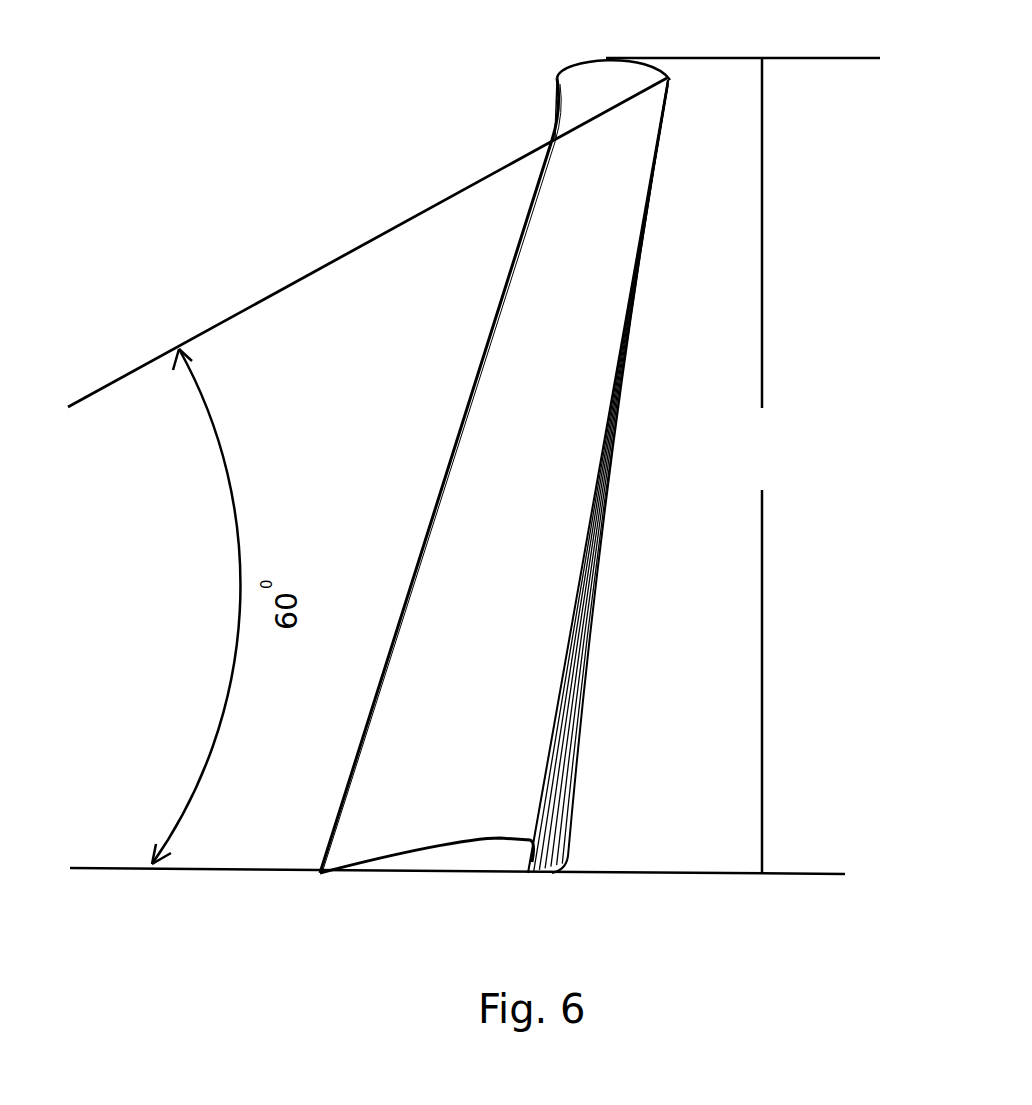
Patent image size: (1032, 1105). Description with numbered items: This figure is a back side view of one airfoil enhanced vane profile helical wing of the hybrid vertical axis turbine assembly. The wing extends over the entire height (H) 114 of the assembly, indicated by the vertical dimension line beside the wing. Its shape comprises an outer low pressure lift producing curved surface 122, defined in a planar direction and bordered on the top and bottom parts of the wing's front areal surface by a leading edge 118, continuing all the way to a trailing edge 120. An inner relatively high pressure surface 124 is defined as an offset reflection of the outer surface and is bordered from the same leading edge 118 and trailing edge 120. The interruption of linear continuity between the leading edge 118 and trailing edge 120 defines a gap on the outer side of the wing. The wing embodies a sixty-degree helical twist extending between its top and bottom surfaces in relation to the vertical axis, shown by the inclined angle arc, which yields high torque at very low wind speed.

The height (H) of the assembly 114 is at (776, 362).
The leading edge 118 is at (628, 54).
The trailing edge 120 is at (548, 138).
The outer low pressure lift producing curved surface 122 is at (572, 880).
The inner relatively high pressure surface 124 is at (576, 72).